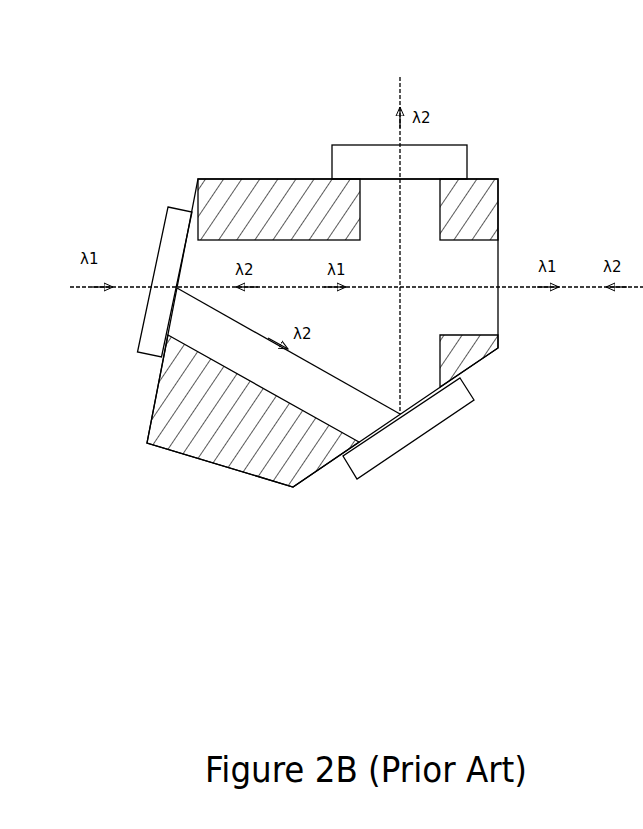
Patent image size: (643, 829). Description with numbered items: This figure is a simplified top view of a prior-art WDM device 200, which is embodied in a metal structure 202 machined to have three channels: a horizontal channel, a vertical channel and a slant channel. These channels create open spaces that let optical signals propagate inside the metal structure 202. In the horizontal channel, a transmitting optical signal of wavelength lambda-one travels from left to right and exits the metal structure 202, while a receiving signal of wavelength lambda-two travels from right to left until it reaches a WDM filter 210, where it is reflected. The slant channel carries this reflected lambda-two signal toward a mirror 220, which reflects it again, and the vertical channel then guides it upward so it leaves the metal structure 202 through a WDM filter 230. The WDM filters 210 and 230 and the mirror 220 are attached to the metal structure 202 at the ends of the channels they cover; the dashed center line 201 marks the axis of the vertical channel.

The WDM device 200 is at (218, 461).
The wavelength-selective filter 201 is at (418, 243).
The metal structure 202 is at (268, 435).
The WDM filter 210 is at (165, 226).
The mirror 220 is at (417, 437).
The WDM filter 230 is at (360, 145).